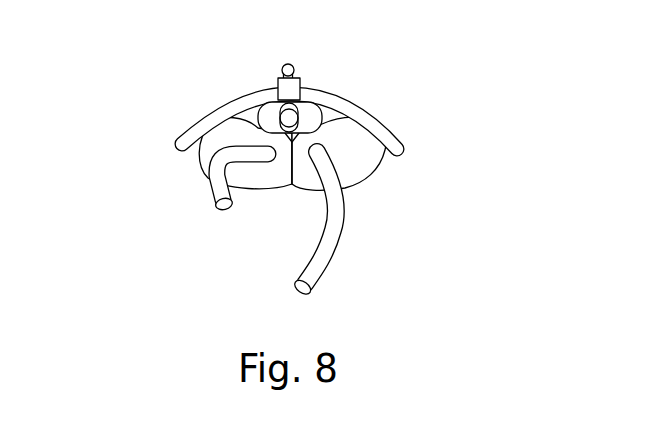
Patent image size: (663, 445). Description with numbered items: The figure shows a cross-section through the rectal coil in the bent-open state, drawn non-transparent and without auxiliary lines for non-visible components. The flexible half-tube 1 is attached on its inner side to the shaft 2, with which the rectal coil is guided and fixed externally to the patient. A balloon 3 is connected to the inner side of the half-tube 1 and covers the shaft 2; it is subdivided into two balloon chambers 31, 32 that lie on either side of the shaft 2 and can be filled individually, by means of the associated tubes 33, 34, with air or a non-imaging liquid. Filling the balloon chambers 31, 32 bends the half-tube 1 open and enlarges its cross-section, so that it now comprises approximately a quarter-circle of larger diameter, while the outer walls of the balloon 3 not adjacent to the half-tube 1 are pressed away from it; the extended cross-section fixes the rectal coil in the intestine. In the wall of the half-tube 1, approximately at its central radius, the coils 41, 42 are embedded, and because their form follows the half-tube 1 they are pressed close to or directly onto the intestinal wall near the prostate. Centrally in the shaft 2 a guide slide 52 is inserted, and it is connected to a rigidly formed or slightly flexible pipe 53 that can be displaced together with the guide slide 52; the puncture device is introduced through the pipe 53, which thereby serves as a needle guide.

The half-tube 1 is at (343, 107).
The shaft 2 is at (307, 118).
The balloon 3 is at (286, 160).
The balloon chamber 31 is at (256, 142).
The balloon chamber 32 is at (335, 153).
The tube 33 is at (218, 188).
The tube 34 is at (330, 233).
The coil 41 is at (252, 103).
The coil 42 is at (257, 141).
The guide slide 52 is at (284, 84).
The pipe 53 is at (292, 72).